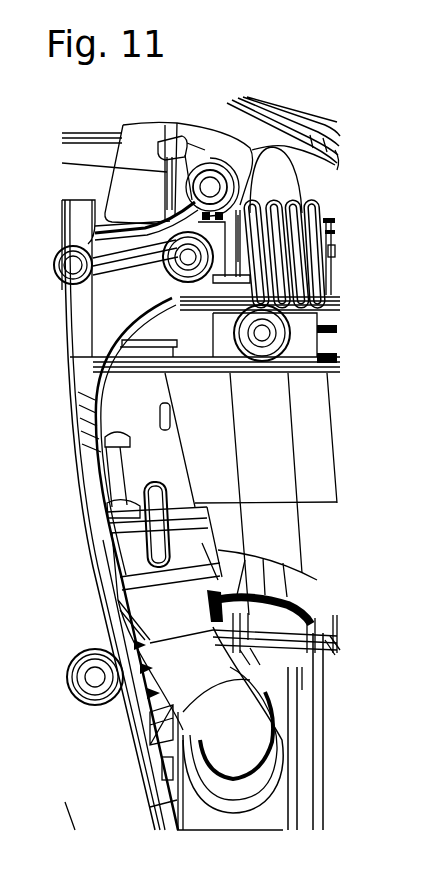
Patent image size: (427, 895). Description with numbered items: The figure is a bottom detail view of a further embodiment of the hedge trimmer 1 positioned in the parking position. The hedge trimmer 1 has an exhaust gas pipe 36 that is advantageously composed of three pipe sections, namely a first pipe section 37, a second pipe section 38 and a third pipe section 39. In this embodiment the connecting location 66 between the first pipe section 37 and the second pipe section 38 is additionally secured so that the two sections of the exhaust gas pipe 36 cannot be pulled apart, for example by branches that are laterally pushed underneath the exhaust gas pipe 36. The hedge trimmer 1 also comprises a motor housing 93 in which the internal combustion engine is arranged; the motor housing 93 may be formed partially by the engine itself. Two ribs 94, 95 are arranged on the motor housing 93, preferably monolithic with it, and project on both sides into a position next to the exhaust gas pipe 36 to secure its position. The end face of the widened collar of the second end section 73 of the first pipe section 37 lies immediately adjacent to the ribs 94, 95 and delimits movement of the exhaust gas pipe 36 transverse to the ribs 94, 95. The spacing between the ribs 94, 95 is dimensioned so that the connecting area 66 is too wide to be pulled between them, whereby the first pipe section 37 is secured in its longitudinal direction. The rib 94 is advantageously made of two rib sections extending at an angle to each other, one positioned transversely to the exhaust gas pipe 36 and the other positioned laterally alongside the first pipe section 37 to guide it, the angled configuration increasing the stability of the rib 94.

The hedge trimmer 1 is at (351, 133).
The exhaust gas pipe 36 is at (176, 386).
The first pipe section 37 is at (235, 715).
The second pipe section 38 is at (172, 452).
The third pipe section 39 is at (118, 188).
The connecting location 66 is at (207, 543).
The second end section 73 is at (108, 580).
The motor housing 93 is at (293, 598).
The rib 94 is at (293, 598).
The rib 95 is at (123, 613).